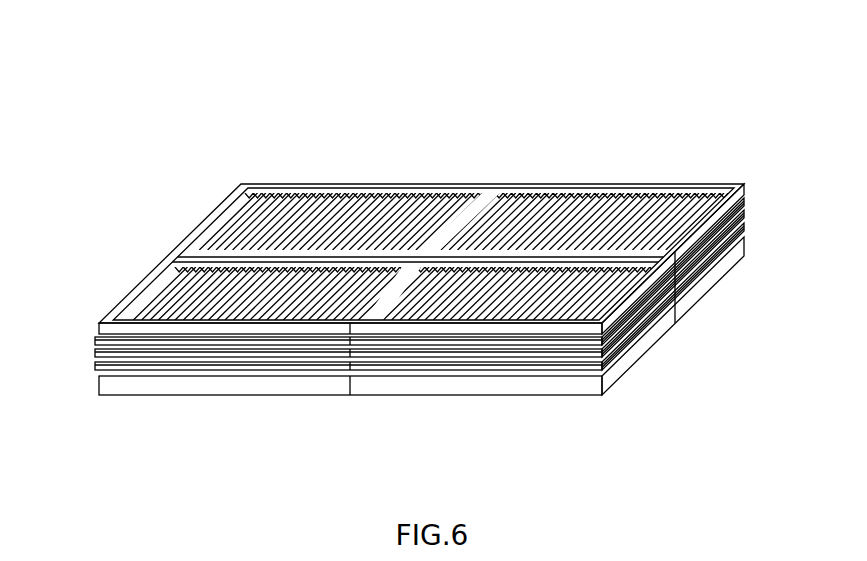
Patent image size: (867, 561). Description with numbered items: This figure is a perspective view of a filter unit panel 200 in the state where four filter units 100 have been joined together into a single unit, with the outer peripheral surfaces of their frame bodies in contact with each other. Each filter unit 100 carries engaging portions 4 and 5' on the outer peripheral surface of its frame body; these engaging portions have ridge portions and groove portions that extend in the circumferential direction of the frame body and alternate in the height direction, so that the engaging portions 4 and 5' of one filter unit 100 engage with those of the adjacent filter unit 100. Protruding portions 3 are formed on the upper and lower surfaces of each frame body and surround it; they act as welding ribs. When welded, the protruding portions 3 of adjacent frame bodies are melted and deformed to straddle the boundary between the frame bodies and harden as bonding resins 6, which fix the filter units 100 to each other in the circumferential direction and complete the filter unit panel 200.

The filter unit panel 200 is at (239, 55).
The filter unit 100 is at (258, 292).
The bonding resin 6 is at (392, 285).
The protruding portion 3 is at (730, 195).
The engaging portion 4 is at (674, 298).
The engaging portion 5' is at (419, 331).